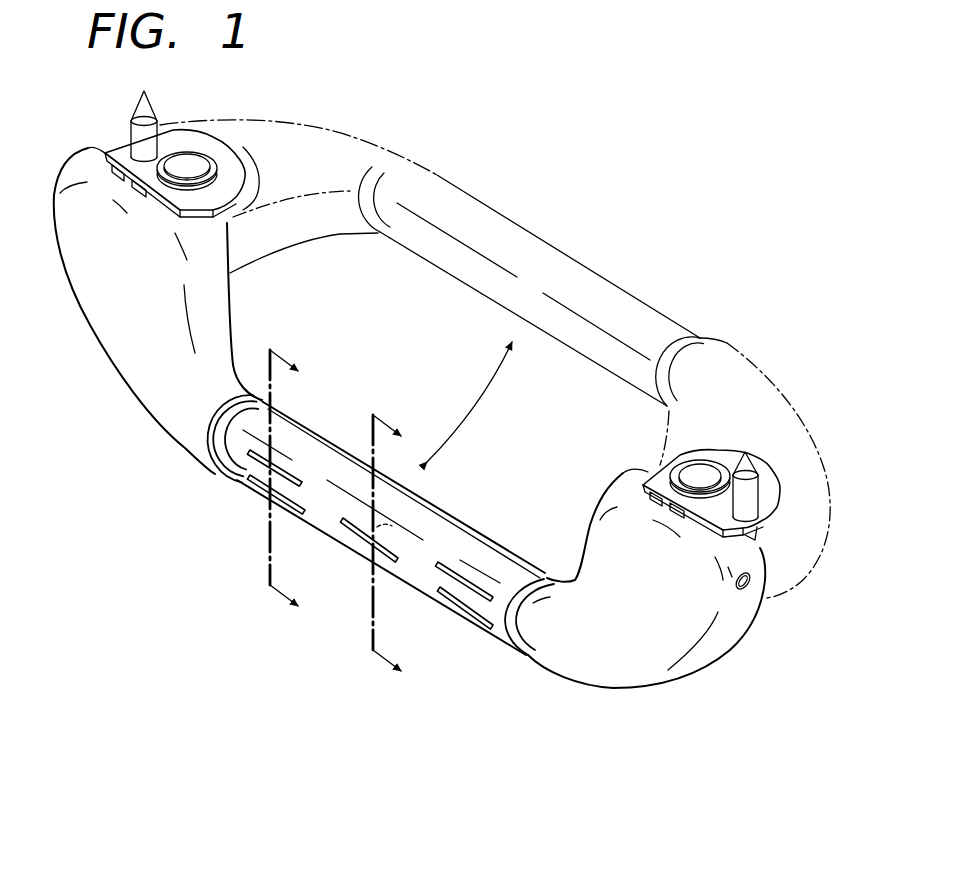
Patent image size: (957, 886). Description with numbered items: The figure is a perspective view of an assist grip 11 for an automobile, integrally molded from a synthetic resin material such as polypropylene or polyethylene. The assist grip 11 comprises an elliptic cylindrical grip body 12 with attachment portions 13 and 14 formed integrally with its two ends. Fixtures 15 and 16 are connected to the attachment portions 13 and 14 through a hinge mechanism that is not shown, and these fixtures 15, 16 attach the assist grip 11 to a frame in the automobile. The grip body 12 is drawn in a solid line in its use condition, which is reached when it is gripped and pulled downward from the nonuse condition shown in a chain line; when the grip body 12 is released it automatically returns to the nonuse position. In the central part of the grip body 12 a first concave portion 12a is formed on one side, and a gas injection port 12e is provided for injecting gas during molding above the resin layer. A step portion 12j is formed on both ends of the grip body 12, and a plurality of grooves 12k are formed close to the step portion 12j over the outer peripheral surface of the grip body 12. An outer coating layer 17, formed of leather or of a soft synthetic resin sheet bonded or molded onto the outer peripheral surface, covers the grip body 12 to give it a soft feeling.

The assist grip 11 is at (128, 439).
The grip body 12 is at (329, 540).
The first concave portion 12a is at (377, 560).
The gas injection port 12e is at (377, 527).
The step portion 12j is at (222, 460).
The grooves 12k is at (273, 473).
The attachment portion 13 is at (107, 313).
The attachment portion 14 is at (628, 660).
The fixture 15 is at (177, 140).
The fixture 16 is at (767, 493).
The outer coating layer 17 is at (345, 445).